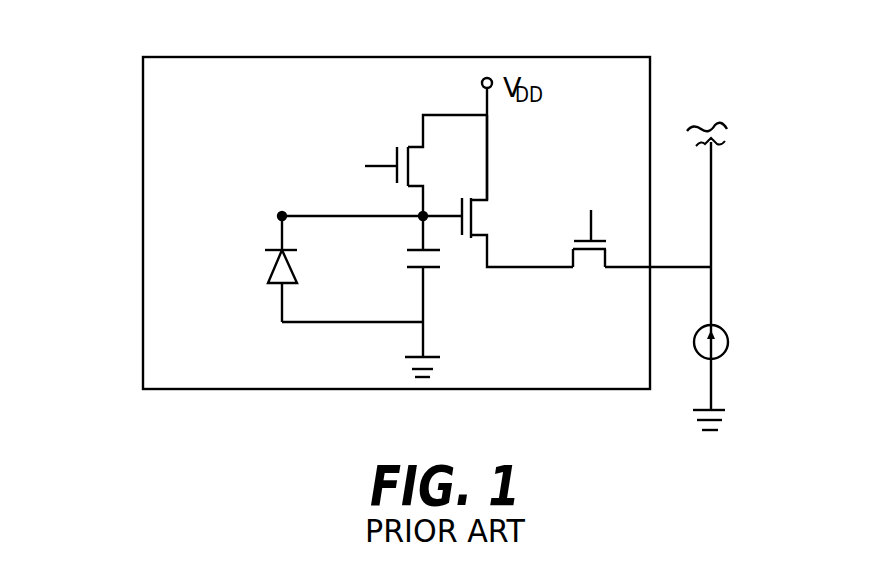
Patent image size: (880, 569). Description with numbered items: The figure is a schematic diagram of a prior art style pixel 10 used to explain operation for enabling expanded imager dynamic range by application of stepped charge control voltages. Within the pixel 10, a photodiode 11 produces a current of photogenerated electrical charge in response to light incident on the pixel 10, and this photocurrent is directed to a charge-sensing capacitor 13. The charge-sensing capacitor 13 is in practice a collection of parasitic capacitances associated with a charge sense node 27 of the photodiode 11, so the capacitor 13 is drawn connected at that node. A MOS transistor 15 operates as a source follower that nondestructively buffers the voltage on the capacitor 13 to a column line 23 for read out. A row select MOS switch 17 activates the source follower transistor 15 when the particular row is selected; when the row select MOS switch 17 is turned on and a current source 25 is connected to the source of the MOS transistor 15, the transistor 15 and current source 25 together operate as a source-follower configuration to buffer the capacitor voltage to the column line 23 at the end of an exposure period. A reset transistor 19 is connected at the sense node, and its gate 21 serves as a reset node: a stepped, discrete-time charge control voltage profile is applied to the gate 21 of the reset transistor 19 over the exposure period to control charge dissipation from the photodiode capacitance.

The pixel 10 is at (112, 82).
The photodiode 11 is at (267, 283).
The charge-sensing capacitor 13 is at (407, 253).
The MOS transistor 15 is at (472, 222).
The row select MOS switch 17 is at (595, 250).
The reset transistor 19 is at (386, 183).
The gate 21 is at (393, 165).
The column line 23 is at (713, 197).
The current source 25 is at (725, 330).
The charge sense node 27 is at (282, 216).